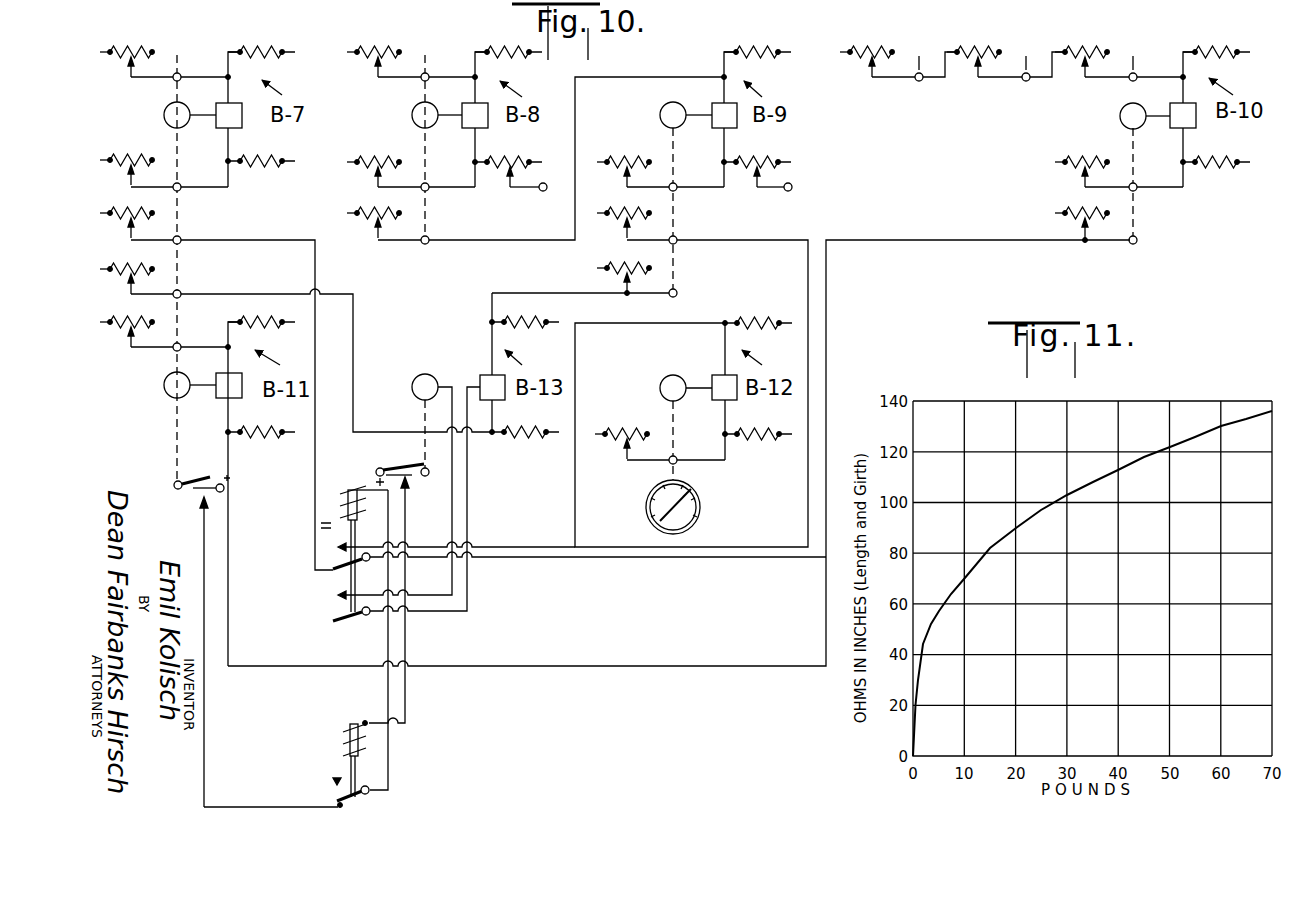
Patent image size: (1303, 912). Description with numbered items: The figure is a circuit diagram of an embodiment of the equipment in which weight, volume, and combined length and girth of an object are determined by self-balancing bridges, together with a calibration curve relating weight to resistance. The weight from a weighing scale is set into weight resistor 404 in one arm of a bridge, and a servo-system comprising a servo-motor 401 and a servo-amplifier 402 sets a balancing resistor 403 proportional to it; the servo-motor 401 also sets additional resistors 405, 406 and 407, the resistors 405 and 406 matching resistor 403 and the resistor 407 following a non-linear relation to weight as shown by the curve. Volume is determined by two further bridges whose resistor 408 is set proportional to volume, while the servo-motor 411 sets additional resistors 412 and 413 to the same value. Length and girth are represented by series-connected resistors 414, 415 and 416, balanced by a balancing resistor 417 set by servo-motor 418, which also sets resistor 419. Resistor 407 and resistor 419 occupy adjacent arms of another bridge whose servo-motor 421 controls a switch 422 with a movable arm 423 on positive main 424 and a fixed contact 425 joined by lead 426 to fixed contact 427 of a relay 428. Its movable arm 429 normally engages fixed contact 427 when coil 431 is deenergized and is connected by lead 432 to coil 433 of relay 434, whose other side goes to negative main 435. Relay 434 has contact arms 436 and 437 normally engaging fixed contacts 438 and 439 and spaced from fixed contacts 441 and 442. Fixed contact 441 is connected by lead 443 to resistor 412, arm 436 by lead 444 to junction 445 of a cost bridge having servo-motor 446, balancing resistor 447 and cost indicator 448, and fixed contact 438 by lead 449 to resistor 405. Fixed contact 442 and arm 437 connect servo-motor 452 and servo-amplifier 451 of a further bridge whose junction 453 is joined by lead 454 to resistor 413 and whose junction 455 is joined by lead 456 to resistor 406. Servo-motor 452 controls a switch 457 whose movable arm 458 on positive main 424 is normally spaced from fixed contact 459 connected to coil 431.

The servo-motor 401 is at (170, 103).
The servo-amplifier 402 is at (216, 105).
The balancing resistor 403 is at (126, 142).
The weight resistor 404 is at (136, 30).
The additional resistor 405 is at (136, 190).
The additional resistor 406 is at (136, 247).
The additional resistor 407 is at (136, 300).
The resistor 408 is at (625, 140).
The servo-motor 411 is at (667, 107).
The additional resistor 412 is at (618, 195).
The additional resistor 413 is at (618, 252).
The resistor 414 is at (1092, 30).
The resistor 415 is at (980, 30).
The resistor 416 is at (880, 30).
The balancing resistor 417 is at (1080, 141).
The servo-motor 418 is at (1126, 105).
The resistor 419 is at (1075, 193).
The servo-motor 421 is at (170, 378).
The switch 422 is at (206, 471).
The movable arm 423 is at (212, 494).
The positive main 424 is at (223, 487).
The fixed contact 425 is at (200, 497).
The lead 426 is at (204, 702).
The fixed contact 427 is at (346, 806).
The relay 428 is at (323, 762).
The movable arm 429 is at (333, 792).
The coil 431 is at (347, 722).
The lead 432 is at (392, 757).
The coil 433 is at (345, 492).
The relay 434 is at (350, 484).
The negative main 435 is at (318, 522).
The contact arm 436 is at (332, 568).
The contact arm 437 is at (332, 620).
The fixed contact 438 is at (331, 573).
The fixed contact 439 is at (340, 628).
The fixed contact 441 is at (336, 548).
The fixed contact 442 is at (336, 596).
The lead 443 is at (515, 547).
The lead 444 is at (515, 563).
The junction 445 is at (725, 320).
The servo-motor 446 is at (669, 375).
The balancing resistor 447 is at (632, 410).
The cost indicator 448 is at (700, 500).
The lead 449 is at (262, 240).
The servo-amplifier 451 is at (483, 374).
The servo-motor 452 is at (417, 375).
The junction 453 is at (490, 320).
The lead 454 is at (558, 280).
The junction 455 is at (494, 436).
The lead 456 is at (355, 308).
The switch 457 is at (433, 478).
The movable arm 458 is at (397, 468).
The fixed contact 459 is at (407, 487).